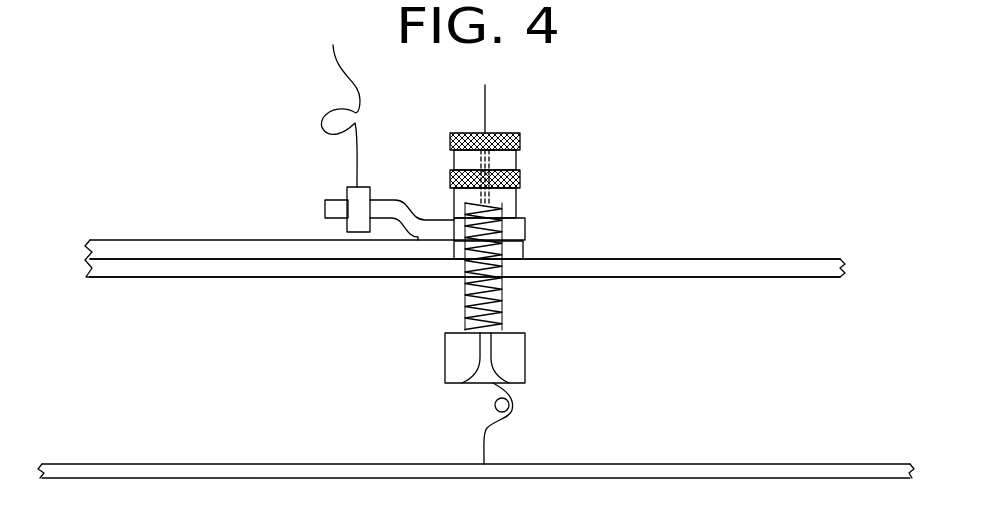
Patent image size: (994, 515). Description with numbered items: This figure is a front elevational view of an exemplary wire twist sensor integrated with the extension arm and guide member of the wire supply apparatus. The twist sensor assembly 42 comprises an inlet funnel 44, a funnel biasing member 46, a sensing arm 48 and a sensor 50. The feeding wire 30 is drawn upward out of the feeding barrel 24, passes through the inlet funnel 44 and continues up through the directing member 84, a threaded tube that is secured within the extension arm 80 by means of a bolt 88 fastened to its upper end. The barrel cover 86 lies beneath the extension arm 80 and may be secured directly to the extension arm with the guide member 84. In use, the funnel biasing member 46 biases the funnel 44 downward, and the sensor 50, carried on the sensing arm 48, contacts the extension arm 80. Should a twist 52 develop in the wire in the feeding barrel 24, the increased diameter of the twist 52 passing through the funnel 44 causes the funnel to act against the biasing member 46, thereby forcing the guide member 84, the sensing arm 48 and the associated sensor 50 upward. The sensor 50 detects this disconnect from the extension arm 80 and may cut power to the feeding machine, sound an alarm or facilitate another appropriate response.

The barrel 24 is at (367, 463).
The feeding wire 30 is at (487, 107).
The twist sensor assembly 42 is at (263, 206).
The inlet funnel 44 is at (522, 355).
The funnel biasing member 46 is at (500, 300).
The sensing arm 48 is at (323, 212).
The sensor 50 is at (370, 193).
The twist 52 is at (495, 410).
The extension arm 80 is at (160, 240).
The directing member 84 is at (523, 227).
The barrel cover 86 is at (143, 277).
The bolt 88 is at (518, 158).